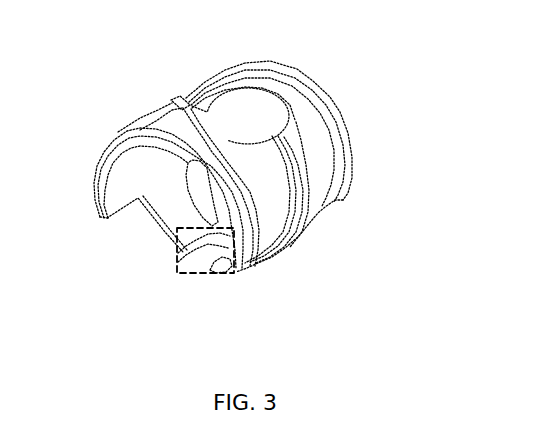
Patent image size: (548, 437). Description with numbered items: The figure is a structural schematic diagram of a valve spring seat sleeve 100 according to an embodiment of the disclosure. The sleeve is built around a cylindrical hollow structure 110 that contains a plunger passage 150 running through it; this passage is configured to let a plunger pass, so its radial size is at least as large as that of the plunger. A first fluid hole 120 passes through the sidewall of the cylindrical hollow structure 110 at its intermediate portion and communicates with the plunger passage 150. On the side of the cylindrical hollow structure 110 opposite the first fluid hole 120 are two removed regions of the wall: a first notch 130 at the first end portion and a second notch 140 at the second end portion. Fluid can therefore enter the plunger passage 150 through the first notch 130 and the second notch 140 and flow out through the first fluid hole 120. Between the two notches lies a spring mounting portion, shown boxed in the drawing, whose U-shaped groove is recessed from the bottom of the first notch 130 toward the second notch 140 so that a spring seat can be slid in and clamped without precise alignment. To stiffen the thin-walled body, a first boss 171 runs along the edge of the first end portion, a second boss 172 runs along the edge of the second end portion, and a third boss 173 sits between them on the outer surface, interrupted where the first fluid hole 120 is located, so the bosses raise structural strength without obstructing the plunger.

The valve spring seat sleeve 100 is at (258, 362).
The cylindrical hollow structure 110 is at (320, 155).
The first fluid hole 120 is at (277, 74).
The first notch 130 is at (122, 267).
The second notch 140 is at (332, 269).
The plunger passage 150 is at (127, 211).
The first boss 171 is at (140, 136).
The second boss 172 is at (317, 103).
The third boss 173 is at (215, 135).